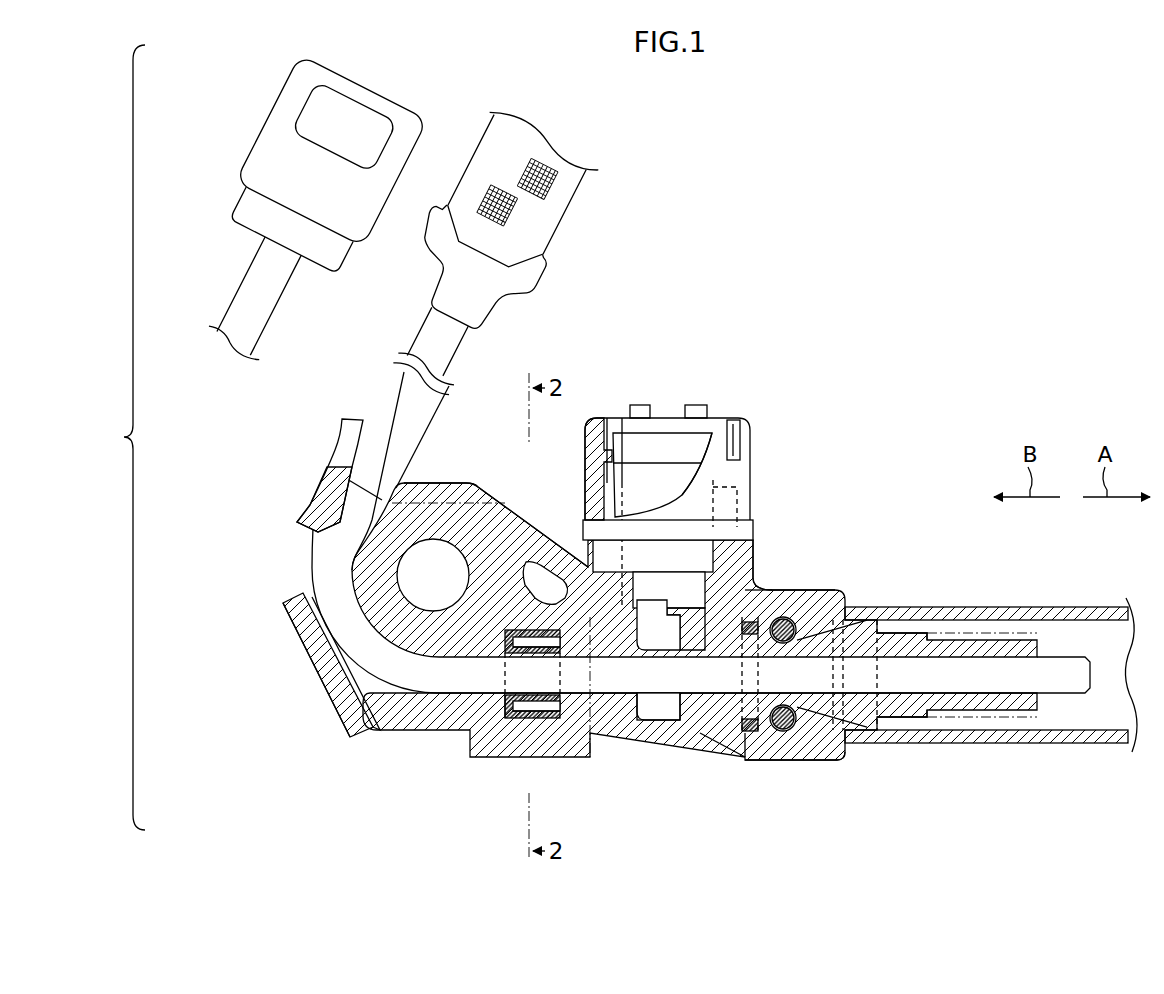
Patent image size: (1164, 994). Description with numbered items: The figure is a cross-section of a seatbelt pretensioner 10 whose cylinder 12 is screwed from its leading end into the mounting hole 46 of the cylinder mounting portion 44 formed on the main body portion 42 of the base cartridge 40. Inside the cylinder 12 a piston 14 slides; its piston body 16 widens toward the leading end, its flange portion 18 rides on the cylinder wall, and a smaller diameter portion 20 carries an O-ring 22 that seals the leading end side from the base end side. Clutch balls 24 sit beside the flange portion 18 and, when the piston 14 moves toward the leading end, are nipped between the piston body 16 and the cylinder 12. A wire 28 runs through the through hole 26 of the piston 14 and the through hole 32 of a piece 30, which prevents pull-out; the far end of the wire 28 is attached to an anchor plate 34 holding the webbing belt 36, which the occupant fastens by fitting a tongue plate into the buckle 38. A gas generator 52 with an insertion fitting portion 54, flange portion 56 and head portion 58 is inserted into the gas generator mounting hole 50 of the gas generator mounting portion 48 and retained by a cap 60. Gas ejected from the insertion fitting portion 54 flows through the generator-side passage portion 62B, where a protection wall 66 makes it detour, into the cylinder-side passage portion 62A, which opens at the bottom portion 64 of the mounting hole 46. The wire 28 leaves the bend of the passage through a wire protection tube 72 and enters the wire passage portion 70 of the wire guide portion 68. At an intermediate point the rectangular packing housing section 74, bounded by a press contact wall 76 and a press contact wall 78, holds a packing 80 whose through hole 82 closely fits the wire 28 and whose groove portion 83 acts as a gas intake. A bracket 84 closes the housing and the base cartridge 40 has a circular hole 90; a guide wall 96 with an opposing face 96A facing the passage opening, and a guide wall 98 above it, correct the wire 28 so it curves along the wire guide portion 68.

The pretensioner 10 is at (812, 280).
The cylinder 12 is at (1050, 606).
The piston 14 is at (880, 740).
The piston body 16 is at (872, 610).
The flange portion 18 is at (760, 727).
The smaller diameter portion 20 is at (713, 715).
The O-ring 22 is at (750, 733).
The clutch balls 24 is at (792, 612).
The through hole 26 is at (877, 683).
The wire 28 is at (268, 318).
The piece 30 is at (967, 640).
The through hole 32 is at (1013, 667).
The anchor plate 34 is at (535, 272).
The webbing belt 36 is at (578, 180).
The buckle 38 is at (250, 168).
The base cartridge 40 is at (828, 520).
The main body portion 42 is at (632, 733).
The cylinder mounting portion 44 is at (840, 757).
The mounting hole 46 is at (820, 740).
The gas generator mounting portion 48 is at (742, 553).
The gas generator mounting hole 50 is at (588, 497).
The gas generator 52 is at (672, 488).
The insertion fitting portion 54 is at (633, 487).
The flange portion 56 is at (693, 472).
The head portion 58 is at (692, 450).
The cap 60 is at (733, 417).
The cylinder-side passage portion 62A is at (680, 712).
The generator-side passage portion 62B is at (653, 545).
The bottom portion 64 is at (760, 607).
The protection wall 66 is at (675, 607).
The wire guide portion 68 is at (477, 497).
The wire passage portion 70 is at (433, 690).
The wire protection tube 72 is at (663, 710).
The packing housing section 74 is at (533, 720).
The press contact wall 76 is at (548, 717).
The press contact wall 78 is at (507, 718).
The packing 80 is at (533, 632).
The through hole 82 is at (580, 692).
The groove portion 83 is at (552, 632).
The bracket 84 is at (308, 672).
The circular hole 90 is at (434, 539).
The guide wall 96 is at (285, 613).
The opposing face 96A is at (387, 695).
The guide wall 98 is at (312, 488).